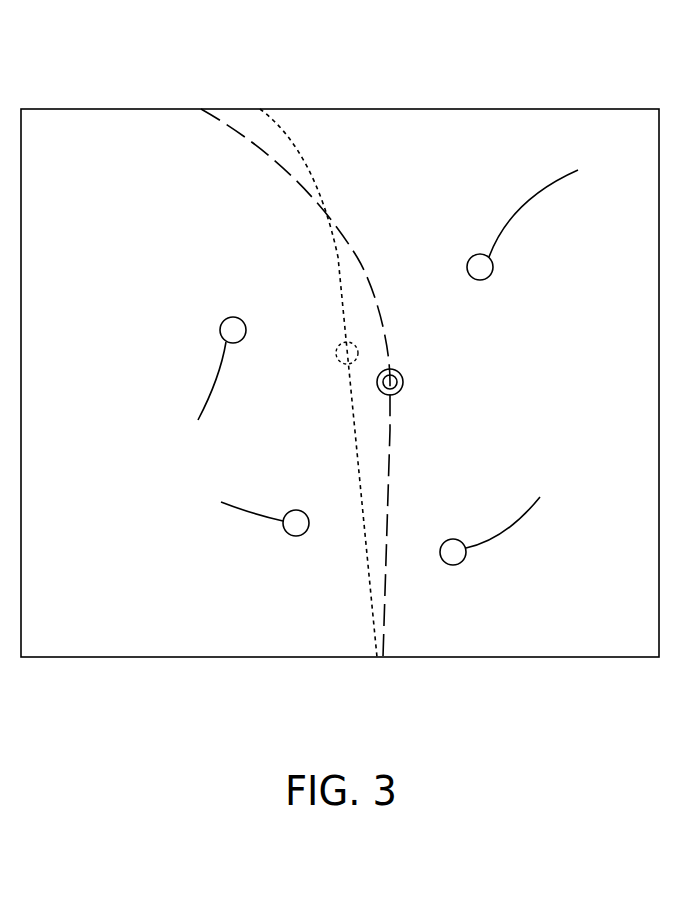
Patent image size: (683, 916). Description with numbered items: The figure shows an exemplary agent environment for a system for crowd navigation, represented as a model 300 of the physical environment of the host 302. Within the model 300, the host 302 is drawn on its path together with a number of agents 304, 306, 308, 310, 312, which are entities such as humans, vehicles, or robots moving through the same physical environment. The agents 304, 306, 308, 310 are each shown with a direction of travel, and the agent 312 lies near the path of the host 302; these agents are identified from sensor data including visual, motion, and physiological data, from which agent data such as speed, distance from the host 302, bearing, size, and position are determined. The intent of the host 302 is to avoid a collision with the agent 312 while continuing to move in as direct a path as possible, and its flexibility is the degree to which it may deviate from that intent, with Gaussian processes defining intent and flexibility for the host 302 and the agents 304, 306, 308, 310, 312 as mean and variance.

The model 300 is at (111, 64).
The host 302 is at (404, 382).
The agent 304 is at (488, 278).
The agent 306 is at (452, 566).
The agent 308 is at (297, 537).
The agent 310 is at (232, 317).
The agent 312 is at (336, 357).